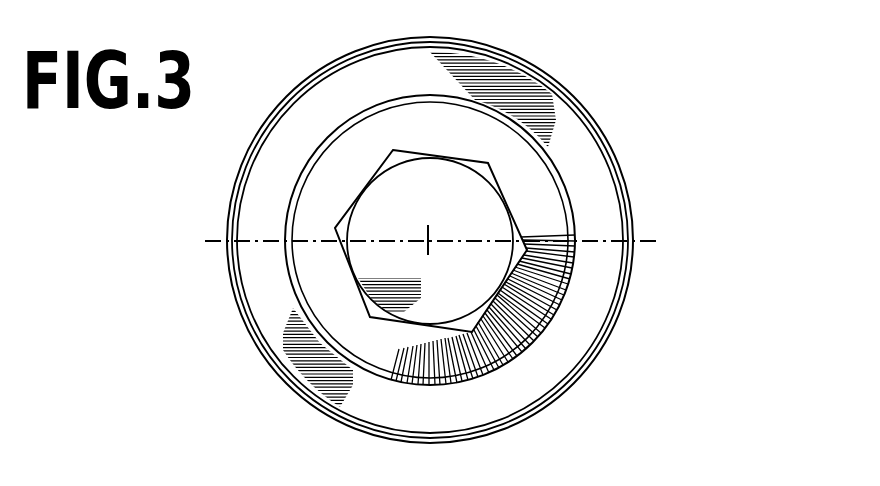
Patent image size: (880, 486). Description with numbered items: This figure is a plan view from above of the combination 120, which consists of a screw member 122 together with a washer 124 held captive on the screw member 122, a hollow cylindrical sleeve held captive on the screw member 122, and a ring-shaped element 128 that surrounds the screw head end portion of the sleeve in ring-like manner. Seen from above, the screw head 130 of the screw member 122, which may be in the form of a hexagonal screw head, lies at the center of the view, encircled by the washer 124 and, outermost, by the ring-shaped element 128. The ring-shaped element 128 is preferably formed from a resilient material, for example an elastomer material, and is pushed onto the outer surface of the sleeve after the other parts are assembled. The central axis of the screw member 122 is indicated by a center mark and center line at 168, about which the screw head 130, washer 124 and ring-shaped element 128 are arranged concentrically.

The combination 120 is at (433, 240).
The ring-shaped element 128 is at (625, 195).
The washer 124 is at (590, 310).
The screw head 130 is at (372, 253).
The screw member 122 is at (392, 292).
The central axis 168 is at (425, 232).